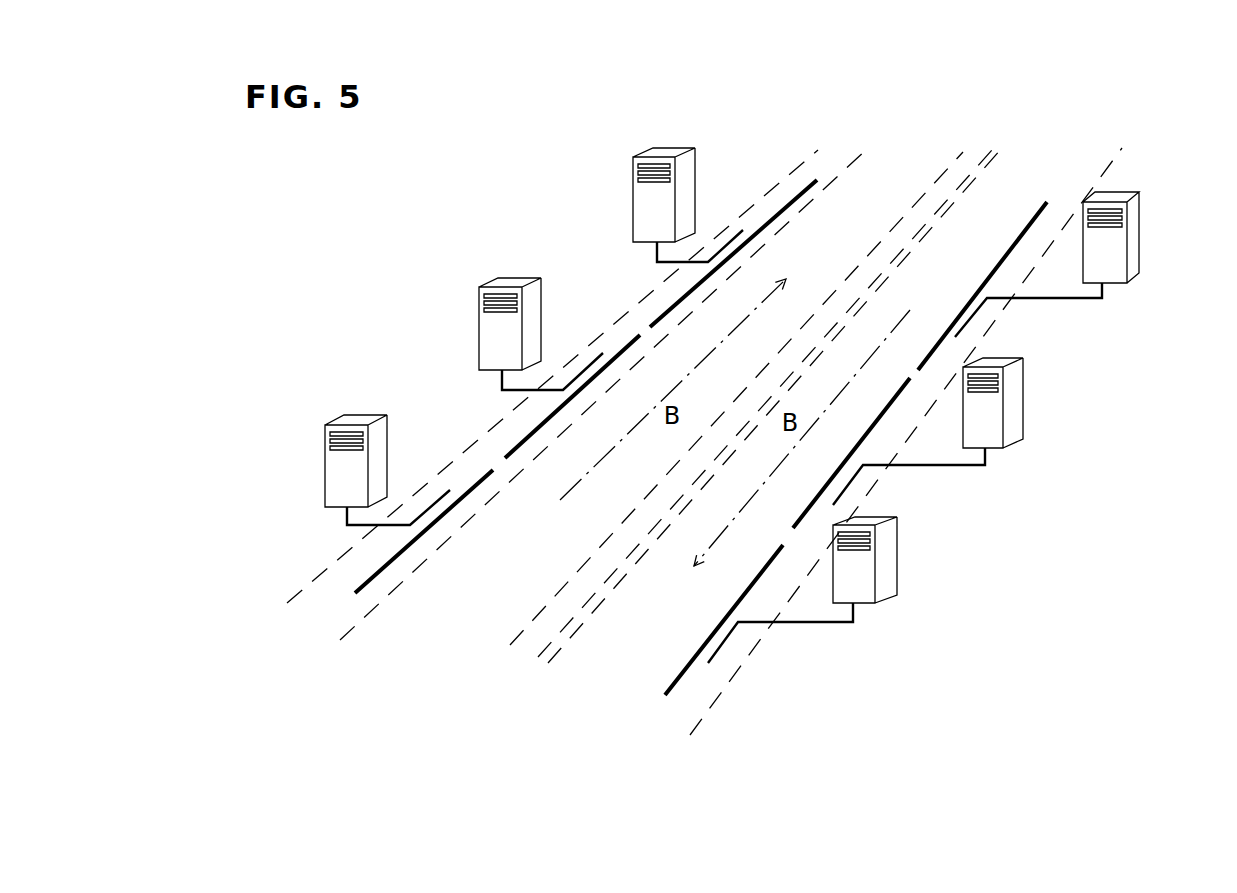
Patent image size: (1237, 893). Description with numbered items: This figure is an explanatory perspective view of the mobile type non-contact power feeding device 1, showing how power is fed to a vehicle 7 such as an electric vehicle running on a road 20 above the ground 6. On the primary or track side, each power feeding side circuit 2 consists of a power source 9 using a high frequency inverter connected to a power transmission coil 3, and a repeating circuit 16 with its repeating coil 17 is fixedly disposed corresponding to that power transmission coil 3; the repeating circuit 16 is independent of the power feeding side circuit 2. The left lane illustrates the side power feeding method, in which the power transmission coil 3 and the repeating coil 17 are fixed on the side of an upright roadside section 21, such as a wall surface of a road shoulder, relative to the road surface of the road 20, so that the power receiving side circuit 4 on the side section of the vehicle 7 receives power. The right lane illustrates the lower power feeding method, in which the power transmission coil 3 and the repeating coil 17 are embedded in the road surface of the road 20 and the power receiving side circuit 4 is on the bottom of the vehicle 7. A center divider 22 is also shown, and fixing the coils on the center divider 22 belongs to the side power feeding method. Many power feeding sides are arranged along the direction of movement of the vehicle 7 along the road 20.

The non-contact power feeding device 1 is at (760, 392).
The power feeding side circuit 2 is at (743, 395).
The power transmission coil 3 is at (426, 521).
The power receiving side circuit 4 is at (751, 422).
The vehicle 7 is at (735, 422).
The ground 6 is at (254, 491).
The power source 9 is at (357, 418).
The repeating circuit 16 is at (766, 407).
The repeating coil 17 is at (478, 483).
The road 20 is at (803, 397).
The upright roadside section 21 is at (327, 609).
The center divider 22 is at (529, 650).